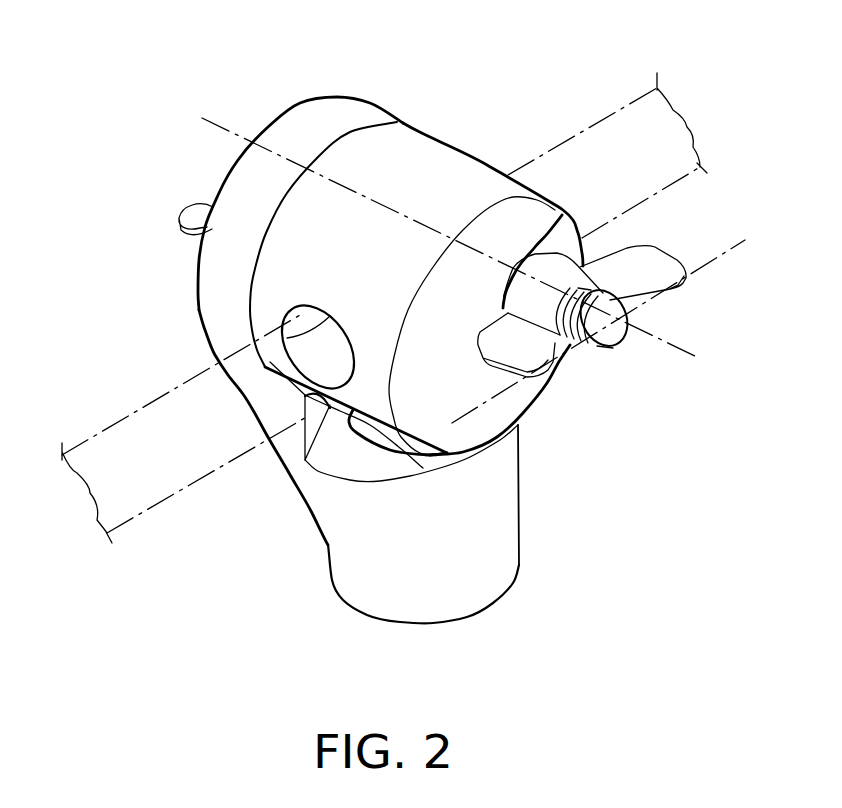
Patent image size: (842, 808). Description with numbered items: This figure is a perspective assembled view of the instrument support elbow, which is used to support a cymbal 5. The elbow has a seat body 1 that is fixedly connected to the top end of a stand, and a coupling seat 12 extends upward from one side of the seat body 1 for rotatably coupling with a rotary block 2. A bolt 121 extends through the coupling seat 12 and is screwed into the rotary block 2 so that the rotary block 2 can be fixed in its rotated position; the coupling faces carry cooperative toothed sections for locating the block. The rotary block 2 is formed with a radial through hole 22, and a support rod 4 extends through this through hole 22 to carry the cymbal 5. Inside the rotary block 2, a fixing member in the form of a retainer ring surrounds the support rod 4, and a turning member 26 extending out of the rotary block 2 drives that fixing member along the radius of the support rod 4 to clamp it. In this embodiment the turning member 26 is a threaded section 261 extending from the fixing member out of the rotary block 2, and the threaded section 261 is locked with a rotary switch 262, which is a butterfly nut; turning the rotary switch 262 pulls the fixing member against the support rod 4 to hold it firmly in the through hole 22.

The seat body 1 is at (513, 555).
The rotary block 2 is at (422, 138).
The coupling seat 12 is at (315, 110).
The bolt 121 is at (193, 220).
The radial through hole 22 is at (285, 335).
The turning member 26 is at (617, 324).
The threaded section 261 is at (615, 348).
The rotary switch 262 is at (638, 250).
The support rod 4 is at (163, 143).
The cymbal 5 is at (731, 247).